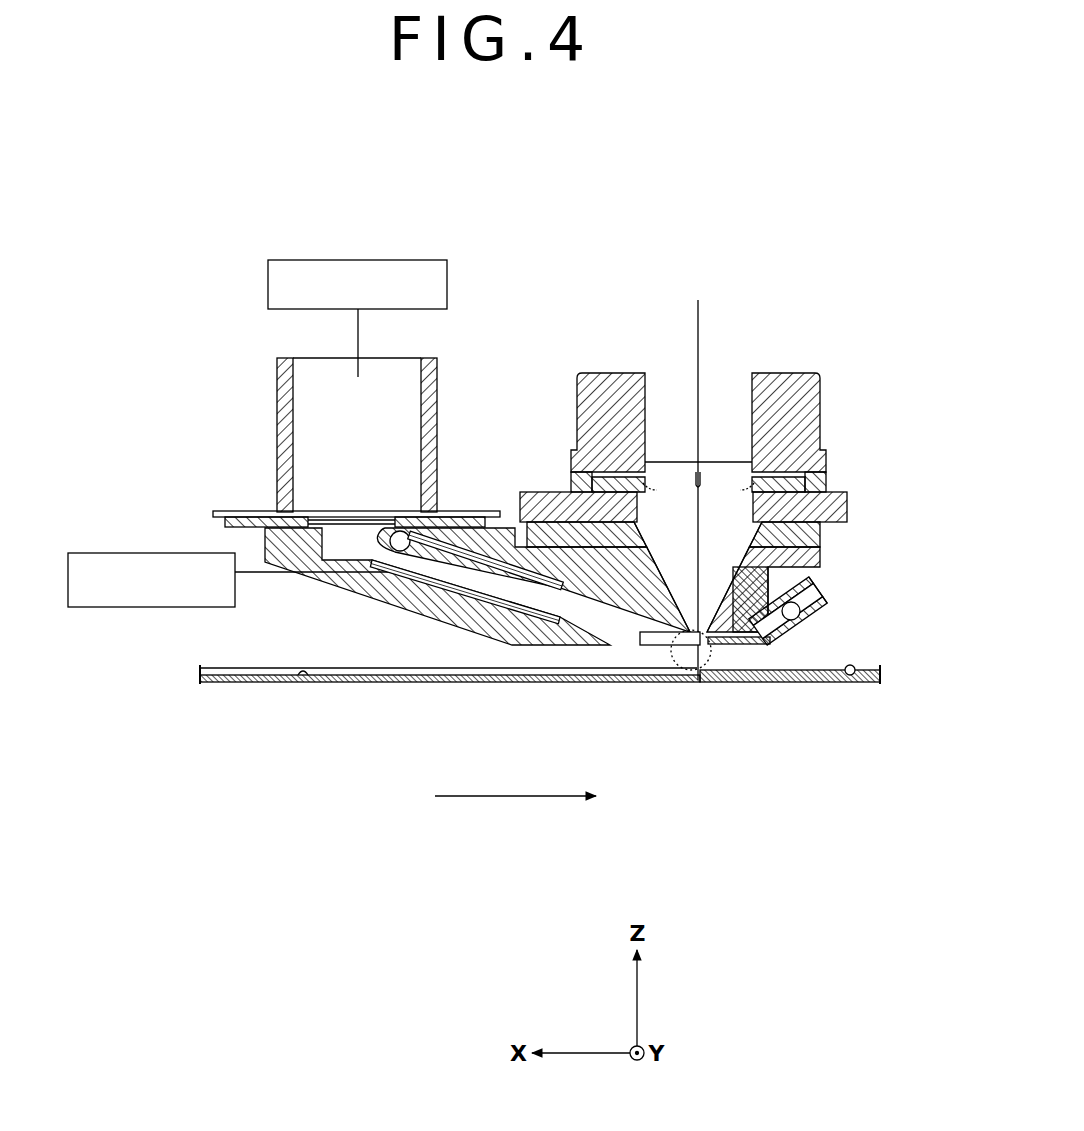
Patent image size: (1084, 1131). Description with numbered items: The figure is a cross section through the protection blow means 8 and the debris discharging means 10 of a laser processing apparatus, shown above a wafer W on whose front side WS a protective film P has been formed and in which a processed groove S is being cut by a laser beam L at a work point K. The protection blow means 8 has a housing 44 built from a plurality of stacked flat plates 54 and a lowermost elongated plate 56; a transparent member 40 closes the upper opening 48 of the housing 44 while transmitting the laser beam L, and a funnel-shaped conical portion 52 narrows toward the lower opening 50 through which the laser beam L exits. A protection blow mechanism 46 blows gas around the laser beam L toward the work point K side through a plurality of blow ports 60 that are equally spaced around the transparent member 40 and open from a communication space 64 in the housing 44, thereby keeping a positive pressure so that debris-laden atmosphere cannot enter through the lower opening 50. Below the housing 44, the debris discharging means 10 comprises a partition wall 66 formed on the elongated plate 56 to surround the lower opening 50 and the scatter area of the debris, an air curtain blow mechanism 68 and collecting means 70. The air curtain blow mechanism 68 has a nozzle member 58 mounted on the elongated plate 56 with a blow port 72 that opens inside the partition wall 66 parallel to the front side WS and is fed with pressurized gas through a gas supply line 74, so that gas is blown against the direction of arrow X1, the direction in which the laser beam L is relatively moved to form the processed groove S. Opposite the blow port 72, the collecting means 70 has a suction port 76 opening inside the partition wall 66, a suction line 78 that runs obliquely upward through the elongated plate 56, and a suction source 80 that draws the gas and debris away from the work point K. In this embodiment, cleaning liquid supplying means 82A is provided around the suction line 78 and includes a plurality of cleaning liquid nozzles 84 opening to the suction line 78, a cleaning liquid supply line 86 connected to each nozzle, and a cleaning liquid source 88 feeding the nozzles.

The protection blow means 8 is at (830, 380).
The debris discharging means 10 is at (268, 386).
The transparent member 40 is at (707, 462).
The housing 44 is at (826, 457).
The protection blow mechanism 46 is at (790, 490).
The upper opening 48 is at (703, 483).
The lower opening 50 is at (765, 643).
The conical portion 52 is at (750, 538).
The flat plates 54 is at (630, 487).
The lowermost elongated plate 56 is at (543, 637).
The nozzle member 58 is at (796, 620).
The blow ports 60 is at (647, 483).
The communication space 64 is at (600, 468).
The partition wall 66 is at (667, 643).
The air curtain blow mechanism 68 is at (758, 680).
The collecting means 70 is at (498, 612).
The blow port 72 is at (712, 645).
The gas supply line 74 is at (813, 598).
The suction port 76 is at (624, 648).
The suction line 78 is at (460, 578).
The suction source 80 is at (348, 262).
The cleaning liquid supplying means 82A is at (428, 600).
The cleaning liquid nozzles 84 is at (400, 531).
The cleaning liquid supply line 86 is at (405, 588).
The cleaning liquid source 88 is at (168, 553).
The work point K is at (712, 660).
The laser beam L is at (696, 320).
The protective film P is at (856, 666).
The processed groove S is at (308, 677).
The wafer W is at (815, 690).
The front side WS is at (872, 665).
The arrow X1 is at (515, 828).